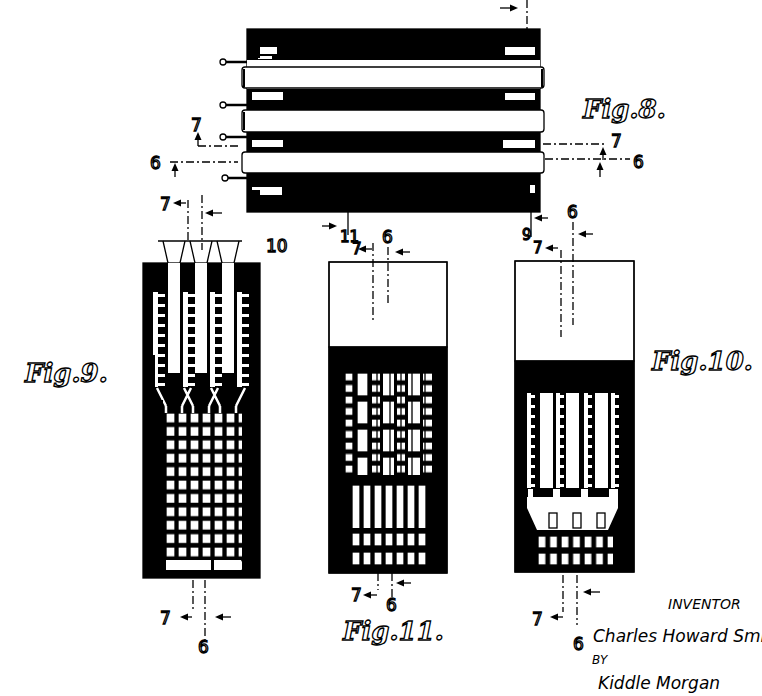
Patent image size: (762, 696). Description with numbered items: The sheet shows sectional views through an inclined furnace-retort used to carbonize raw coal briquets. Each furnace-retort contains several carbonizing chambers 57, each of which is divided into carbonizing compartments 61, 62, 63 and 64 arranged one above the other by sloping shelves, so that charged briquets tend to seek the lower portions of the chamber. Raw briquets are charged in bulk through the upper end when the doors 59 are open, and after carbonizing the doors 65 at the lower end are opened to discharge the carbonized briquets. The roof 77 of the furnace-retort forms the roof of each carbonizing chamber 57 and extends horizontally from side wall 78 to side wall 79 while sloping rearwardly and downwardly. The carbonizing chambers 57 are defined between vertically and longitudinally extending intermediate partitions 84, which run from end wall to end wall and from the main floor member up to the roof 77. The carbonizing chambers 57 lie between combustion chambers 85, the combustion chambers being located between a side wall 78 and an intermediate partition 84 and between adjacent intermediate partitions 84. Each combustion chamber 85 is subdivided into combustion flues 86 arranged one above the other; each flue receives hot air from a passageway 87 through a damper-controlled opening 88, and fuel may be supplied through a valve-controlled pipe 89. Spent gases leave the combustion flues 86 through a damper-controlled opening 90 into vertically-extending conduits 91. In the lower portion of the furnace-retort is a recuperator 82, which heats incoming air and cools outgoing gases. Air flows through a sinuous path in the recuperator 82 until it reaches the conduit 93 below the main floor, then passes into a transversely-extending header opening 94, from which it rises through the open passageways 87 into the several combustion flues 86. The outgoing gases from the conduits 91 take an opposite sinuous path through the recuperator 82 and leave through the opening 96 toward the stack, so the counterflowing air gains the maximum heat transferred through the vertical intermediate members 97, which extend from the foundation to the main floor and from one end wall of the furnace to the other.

In FIG. 9, the carbonizing chambers 57 is at (201, 331).
In FIG. 8, the doors 59 is at (545, 80).
In FIG. 11, the carbonizing compartment 61 is at (345, 398).
In FIG. 11, the carbonizing compartment 62 is at (345, 428).
In FIG. 11, the carbonizing compartment 63 is at (345, 455).
In FIG. 11, the carbonizing compartment 64 is at (345, 470).
In FIG. 8, the doors 65 is at (243, 121).
In FIG. 11, the roof 77 is at (398, 347).
In FIG. 10, the roof 77 is at (568, 361).
In FIG. 8, the side wall 78 is at (460, 212).
In FIG. 9, the side wall 78 is at (143, 318).
In FIG. 11, the side wall 78 is at (508, 412).
In FIG. 8, the side wall 79 is at (437, 29).
In FIG. 9, the side wall 79 is at (260, 348).
In FIG. 10, the side wall 79 is at (634, 425).
In FIG. 9, the recuperator 82 is at (143, 513).
In FIG. 8, the intermediate partitions 84 is at (361, 88).
In FIG. 11, the intermediate partitions 84 is at (447, 407).
In FIG. 9, the combustion chambers 85 is at (143, 293).
In FIG. 10, the combustion chambers 85 is at (634, 405).
In FIG. 11, the combustion flues 86 is at (448, 456).
In FIG. 8, the passageway 87 is at (245, 48).
In FIG. 10, the passageway 87 is at (532, 472).
In FIG. 8, the damper-controlled opening 88 is at (250, 72).
In FIG. 8, the valve-controlled pipe 89 is at (247, 58).
In FIG. 8, the damper-controlled opening 90 is at (540, 60).
In FIG. 8, the conduit 91 is at (540, 47).
In FIG. 9, the conduit 91 is at (143, 368).
In FIG. 9, the conduit 93 is at (143, 428).
In FIG. 10, the header opening 94 is at (634, 507).
In FIG. 9, the opening 96 is at (215, 578).
In FIG. 9, the intermediate members 97 is at (196, 556).